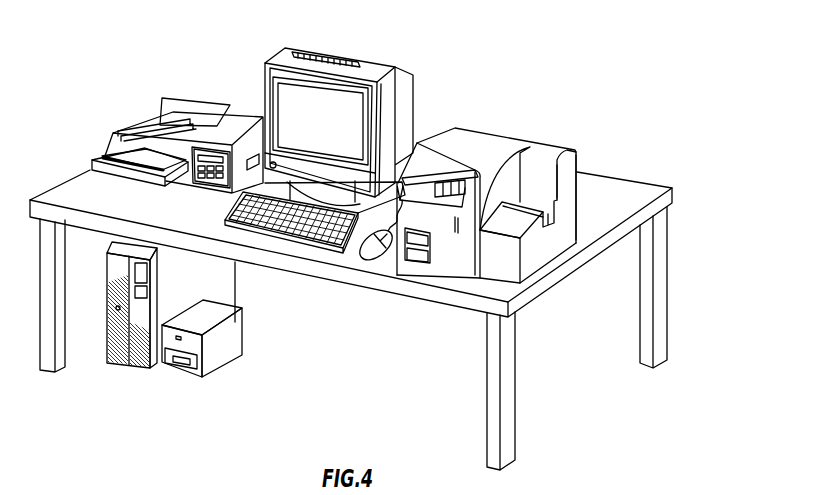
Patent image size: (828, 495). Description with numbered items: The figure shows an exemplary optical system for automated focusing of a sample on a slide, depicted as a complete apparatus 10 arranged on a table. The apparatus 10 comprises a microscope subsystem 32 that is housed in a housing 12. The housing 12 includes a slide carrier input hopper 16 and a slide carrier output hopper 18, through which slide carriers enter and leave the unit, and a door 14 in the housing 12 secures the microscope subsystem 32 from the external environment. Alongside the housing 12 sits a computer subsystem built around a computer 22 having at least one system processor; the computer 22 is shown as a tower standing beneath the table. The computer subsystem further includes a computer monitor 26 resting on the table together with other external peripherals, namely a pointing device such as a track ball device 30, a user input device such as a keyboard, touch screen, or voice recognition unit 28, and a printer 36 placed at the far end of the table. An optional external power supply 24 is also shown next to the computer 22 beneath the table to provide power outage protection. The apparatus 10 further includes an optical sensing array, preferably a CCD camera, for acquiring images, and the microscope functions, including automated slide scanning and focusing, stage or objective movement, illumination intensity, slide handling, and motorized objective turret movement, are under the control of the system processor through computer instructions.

The apparatus 10 is at (641, 61).
The housing 12 is at (468, 140).
The door 14 is at (442, 260).
The slide carrier input hopper 16 is at (537, 200).
The slide carrier output hopper 18 is at (427, 262).
The computer 22 is at (227, 300).
The external power supply 24 is at (217, 358).
The computer monitor 26 is at (383, 68).
The user input device 28 is at (228, 217).
The track ball device 30 is at (372, 253).
The microscope subsystem 32 is at (572, 213).
The printer 36 is at (127, 132).